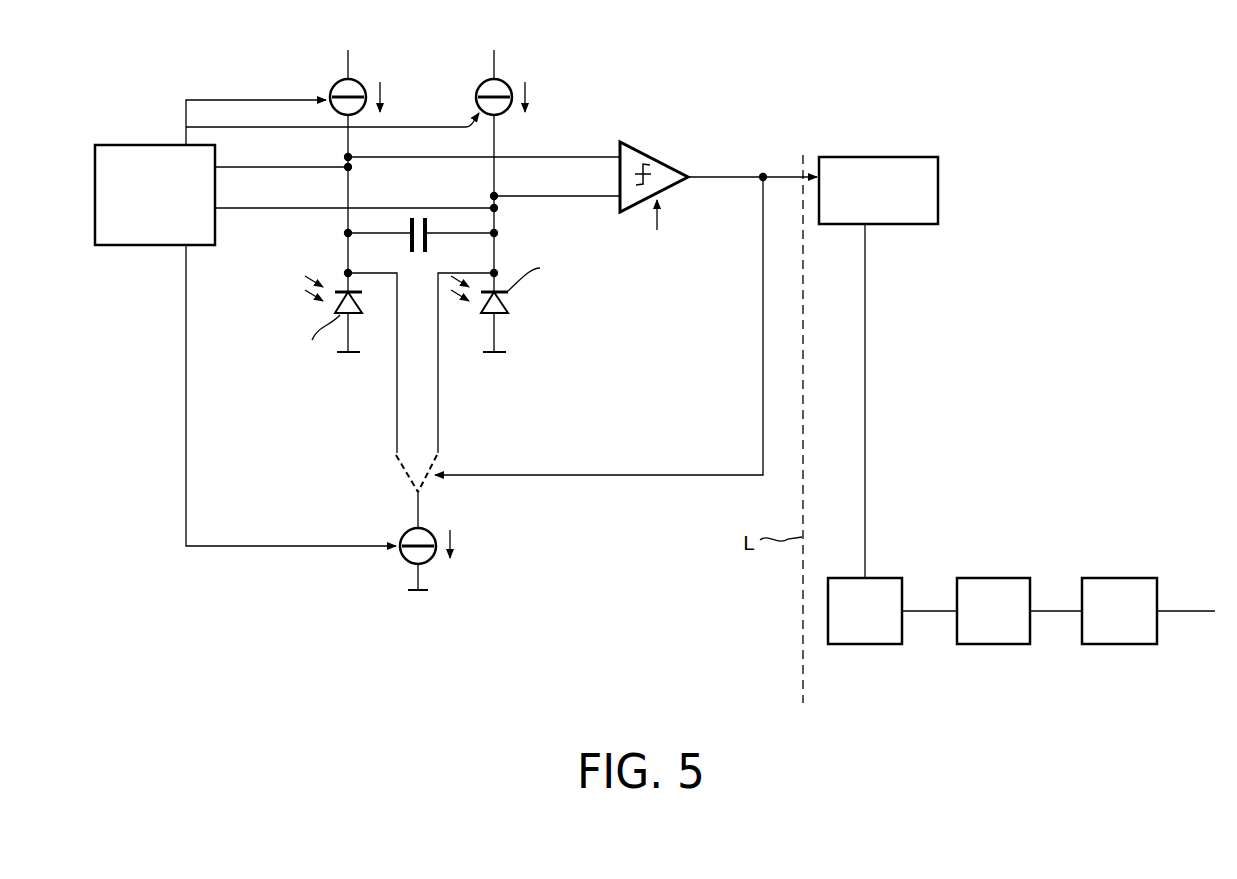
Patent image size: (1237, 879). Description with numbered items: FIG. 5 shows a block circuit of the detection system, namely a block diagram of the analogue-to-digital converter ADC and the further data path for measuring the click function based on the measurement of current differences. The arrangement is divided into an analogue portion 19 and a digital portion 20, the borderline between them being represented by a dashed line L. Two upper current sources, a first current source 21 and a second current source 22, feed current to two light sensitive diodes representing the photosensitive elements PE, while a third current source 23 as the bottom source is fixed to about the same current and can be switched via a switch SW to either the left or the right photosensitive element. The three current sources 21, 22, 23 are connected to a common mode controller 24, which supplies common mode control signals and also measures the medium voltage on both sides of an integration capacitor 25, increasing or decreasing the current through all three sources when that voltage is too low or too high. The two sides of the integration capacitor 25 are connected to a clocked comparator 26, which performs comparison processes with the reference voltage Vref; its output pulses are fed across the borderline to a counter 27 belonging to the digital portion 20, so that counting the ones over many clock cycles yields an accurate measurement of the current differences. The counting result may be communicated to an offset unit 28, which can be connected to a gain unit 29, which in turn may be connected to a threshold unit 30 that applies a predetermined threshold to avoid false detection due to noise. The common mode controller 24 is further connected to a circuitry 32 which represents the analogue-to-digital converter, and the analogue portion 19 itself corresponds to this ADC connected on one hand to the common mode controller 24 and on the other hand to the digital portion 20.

The analogue portion 19 is at (562, 600).
The digital portion 20 is at (998, 684).
The first current source 21 is at (361, 82).
The second current source 22 is at (508, 82).
The third current source 23 is at (405, 560).
The common mode controller 24 is at (152, 248).
The integration capacitor 25 is at (407, 247).
The comparator 26 is at (660, 159).
The counter 27 is at (906, 156).
The offset unit 28 is at (893, 577).
The gain unit 29 is at (1009, 577).
The threshold unit 30 is at (1121, 577).
The circuitry 32 is at (152, 551).